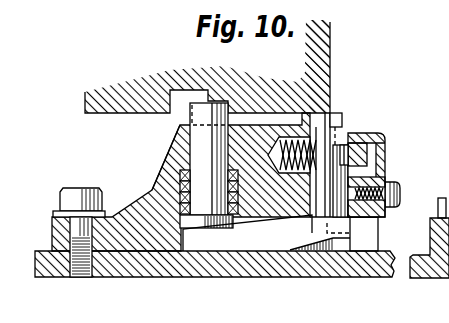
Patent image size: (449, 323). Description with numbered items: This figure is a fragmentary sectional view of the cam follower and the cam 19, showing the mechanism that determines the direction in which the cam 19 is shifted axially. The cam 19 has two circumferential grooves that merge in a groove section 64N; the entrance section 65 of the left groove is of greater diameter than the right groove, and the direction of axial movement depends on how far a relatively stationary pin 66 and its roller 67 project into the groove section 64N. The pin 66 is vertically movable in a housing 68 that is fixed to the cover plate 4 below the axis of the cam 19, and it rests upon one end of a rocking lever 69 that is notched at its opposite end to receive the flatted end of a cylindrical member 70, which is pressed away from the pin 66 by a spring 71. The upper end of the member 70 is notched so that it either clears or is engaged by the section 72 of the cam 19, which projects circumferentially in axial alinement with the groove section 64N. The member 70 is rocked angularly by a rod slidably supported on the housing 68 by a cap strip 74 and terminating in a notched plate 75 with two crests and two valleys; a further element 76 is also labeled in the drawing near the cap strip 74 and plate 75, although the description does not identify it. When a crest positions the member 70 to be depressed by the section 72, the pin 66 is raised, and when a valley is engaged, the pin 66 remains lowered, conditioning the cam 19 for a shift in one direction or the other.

The cover plate 4 is at (200, 277).
The cam 19 is at (329, 53).
The groove section 64N is at (192, 89).
The entrance section 65 is at (216, 100).
The pin 66 is at (171, 157).
The roller 67 is at (192, 118).
The housing 68 is at (156, 184).
The rocking lever 69 is at (270, 240).
The cylindrical member 70 is at (346, 207).
The spring 71 is at (328, 142).
The section of cam 72 is at (321, 118).
The cap strip 74 is at (386, 167).
The notched plate 75 is at (368, 150).
The screw 76 is at (352, 144).